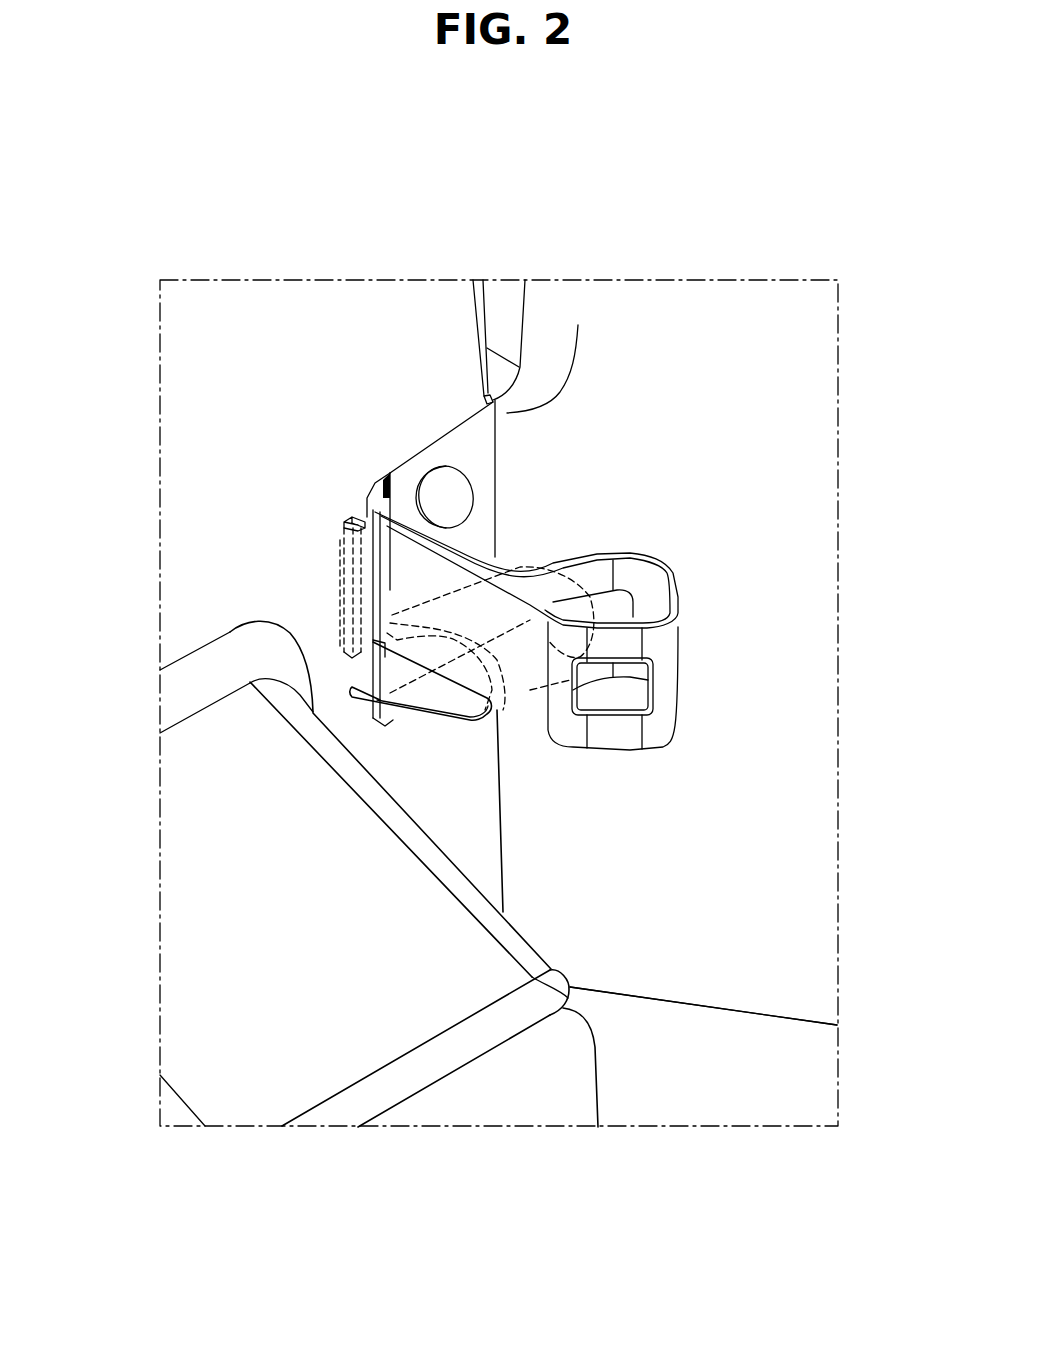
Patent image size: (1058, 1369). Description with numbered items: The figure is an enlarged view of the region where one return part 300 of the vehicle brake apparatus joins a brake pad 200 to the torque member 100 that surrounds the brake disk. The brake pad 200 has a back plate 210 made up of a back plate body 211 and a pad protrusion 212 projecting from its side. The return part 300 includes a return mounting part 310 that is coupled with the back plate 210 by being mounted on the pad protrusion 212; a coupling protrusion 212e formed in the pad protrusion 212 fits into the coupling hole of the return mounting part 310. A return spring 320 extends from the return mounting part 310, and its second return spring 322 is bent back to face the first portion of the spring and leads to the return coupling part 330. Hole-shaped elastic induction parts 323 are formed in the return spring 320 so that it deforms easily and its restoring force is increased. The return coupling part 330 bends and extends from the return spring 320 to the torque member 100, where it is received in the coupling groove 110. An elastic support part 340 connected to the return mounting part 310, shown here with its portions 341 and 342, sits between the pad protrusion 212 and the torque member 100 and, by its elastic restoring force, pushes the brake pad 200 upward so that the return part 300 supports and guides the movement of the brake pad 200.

The torque member 100 is at (244, 372).
The coupling groove 110 is at (342, 577).
The brake pad 200 is at (696, 586).
The back plate 210 is at (655, 586).
The back plate body 211 is at (670, 320).
The pad protrusion 212 is at (578, 325).
The coupling protrusion 212e is at (455, 495).
The return part 300 is at (498, 801).
The return mounting part 310 is at (648, 532).
The return spring 320 is at (613, 530).
The second return spring 322 is at (653, 737).
The elastic induction part 323 is at (617, 610).
The return coupling part 330 is at (345, 611).
The elastic support part 340 is at (516, 915).
The support strut 341 is at (541, 690).
The support channel 342 is at (446, 717).